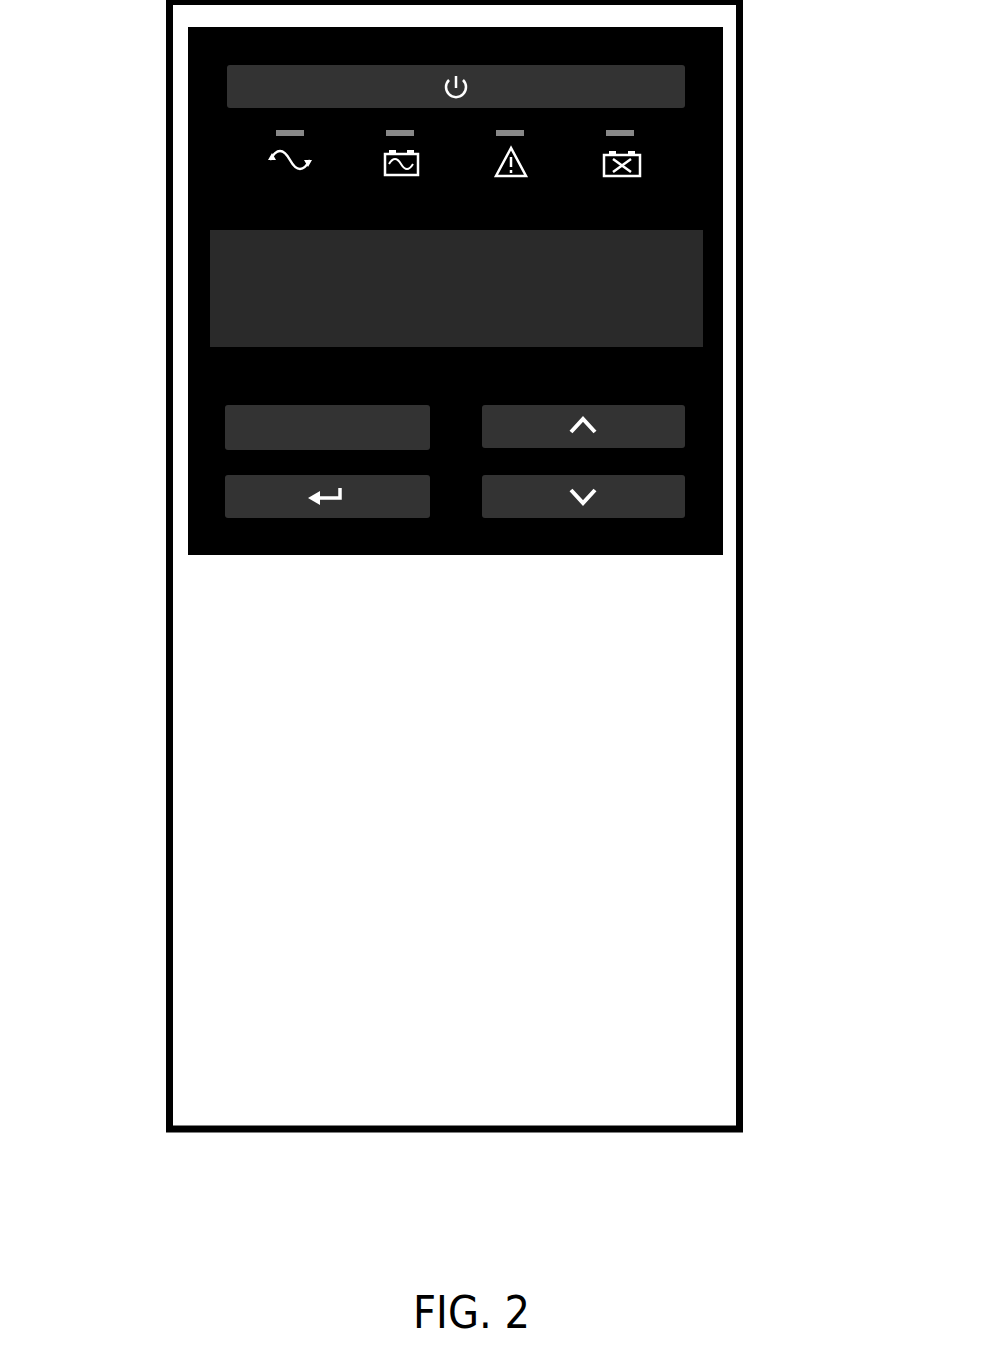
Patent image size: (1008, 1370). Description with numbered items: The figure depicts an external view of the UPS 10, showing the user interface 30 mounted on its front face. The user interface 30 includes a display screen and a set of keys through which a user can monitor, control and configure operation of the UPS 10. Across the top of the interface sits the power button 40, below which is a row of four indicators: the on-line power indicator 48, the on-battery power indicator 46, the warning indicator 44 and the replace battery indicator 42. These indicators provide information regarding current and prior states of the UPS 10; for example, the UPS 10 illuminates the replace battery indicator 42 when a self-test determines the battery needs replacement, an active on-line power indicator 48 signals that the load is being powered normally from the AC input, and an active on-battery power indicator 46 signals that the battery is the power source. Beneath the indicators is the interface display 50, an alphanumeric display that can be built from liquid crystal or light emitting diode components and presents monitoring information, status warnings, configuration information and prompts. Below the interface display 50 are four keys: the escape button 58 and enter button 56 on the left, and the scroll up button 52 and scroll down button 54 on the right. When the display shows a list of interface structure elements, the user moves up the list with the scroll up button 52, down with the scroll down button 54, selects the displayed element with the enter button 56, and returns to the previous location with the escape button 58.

The UPS 10 is at (166, 1108).
The user interface 30 is at (405, 562).
The power button 40 is at (723, 63).
The replace battery indicator 42 is at (640, 158).
The warning indicator 44 is at (723, 208).
The on-battery power indicator 46 is at (380, 176).
The on-line power indicator 48 is at (268, 158).
The interface display 50 is at (690, 292).
The scroll up button 52 is at (680, 430).
The scroll down button 54 is at (685, 500).
The enter button 56 is at (235, 512).
The escape button 58 is at (235, 428).